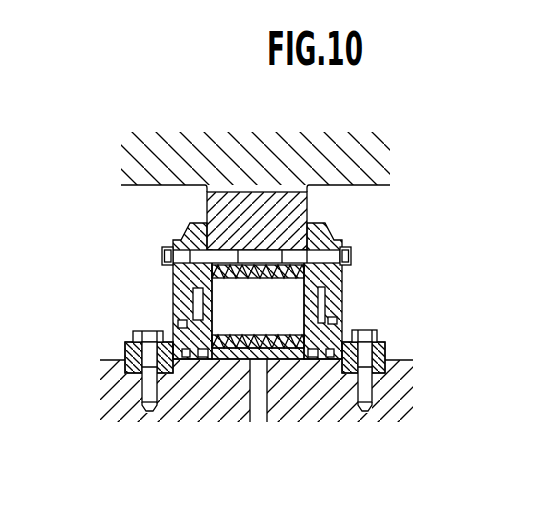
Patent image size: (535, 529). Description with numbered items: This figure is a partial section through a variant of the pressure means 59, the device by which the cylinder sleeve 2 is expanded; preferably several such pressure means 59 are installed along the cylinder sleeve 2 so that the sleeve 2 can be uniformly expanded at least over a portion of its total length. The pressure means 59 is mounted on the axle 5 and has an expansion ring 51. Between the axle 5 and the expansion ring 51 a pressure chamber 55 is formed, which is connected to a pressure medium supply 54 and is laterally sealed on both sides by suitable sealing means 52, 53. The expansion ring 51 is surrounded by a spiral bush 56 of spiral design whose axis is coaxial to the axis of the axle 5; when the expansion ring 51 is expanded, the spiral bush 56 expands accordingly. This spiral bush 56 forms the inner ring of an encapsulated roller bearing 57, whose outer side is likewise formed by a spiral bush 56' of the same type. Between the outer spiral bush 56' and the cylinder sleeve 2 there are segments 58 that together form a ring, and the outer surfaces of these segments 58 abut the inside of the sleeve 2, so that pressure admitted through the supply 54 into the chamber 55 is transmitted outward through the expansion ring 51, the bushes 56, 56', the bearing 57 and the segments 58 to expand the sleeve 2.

The cylinder sleeve 2 is at (162, 146).
The axle 5 is at (103, 408).
The expansion ring 51 is at (287, 363).
The sealing means 52 is at (201, 363).
The sealing means 53 is at (173, 330).
The pressure medium supply 54 is at (263, 405).
The pressure chamber 55 is at (222, 370).
The spiral bush 56 is at (317, 321).
The spiral bush 56' is at (322, 275).
The encapsulated roller bearing 57 is at (228, 300).
The segments 58 is at (335, 237).
The pressure means 59 is at (235, 275).